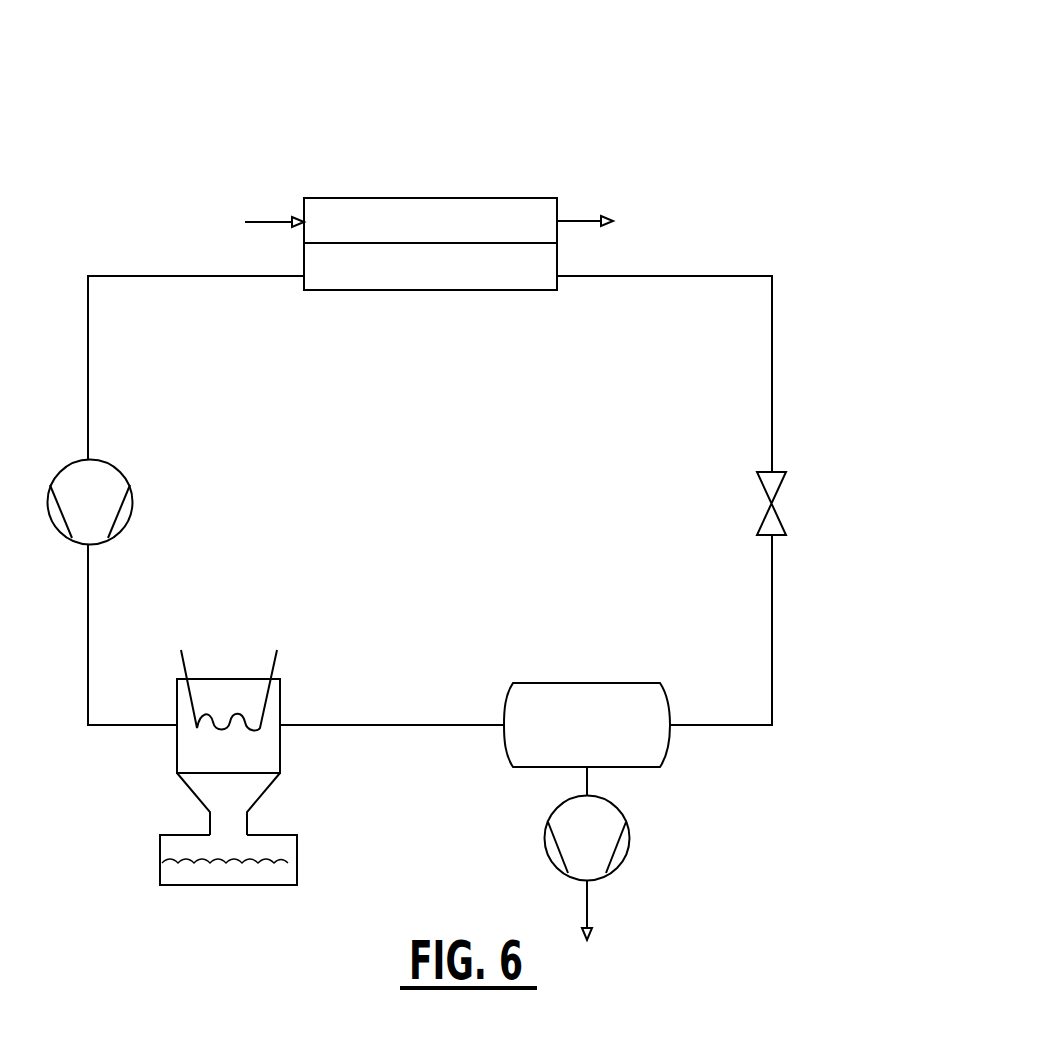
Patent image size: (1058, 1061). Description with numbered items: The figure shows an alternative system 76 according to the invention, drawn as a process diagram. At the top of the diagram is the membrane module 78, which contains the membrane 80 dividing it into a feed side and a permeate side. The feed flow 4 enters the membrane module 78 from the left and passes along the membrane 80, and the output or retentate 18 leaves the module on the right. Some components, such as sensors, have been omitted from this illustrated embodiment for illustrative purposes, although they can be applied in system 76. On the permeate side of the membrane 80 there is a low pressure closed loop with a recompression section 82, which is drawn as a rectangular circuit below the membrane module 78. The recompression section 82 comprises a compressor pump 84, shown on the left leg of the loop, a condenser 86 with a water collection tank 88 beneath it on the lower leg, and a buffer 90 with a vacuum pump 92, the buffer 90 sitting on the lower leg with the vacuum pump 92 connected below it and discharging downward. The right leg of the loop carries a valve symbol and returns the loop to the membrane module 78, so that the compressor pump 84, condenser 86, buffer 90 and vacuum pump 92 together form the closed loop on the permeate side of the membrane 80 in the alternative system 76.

The feed flow 4 is at (265, 221).
The retentate 18 is at (578, 219).
The alternative system 76 is at (643, 147).
The membrane module 78 is at (465, 197).
The membrane 80 is at (415, 243).
The recompression section 82 is at (790, 433).
The compressor pump 84 is at (98, 472).
The condenser 86 is at (274, 694).
The water collection tank 88 is at (288, 845).
The buffer 90 is at (587, 690).
The vacuum pump 92 is at (628, 845).